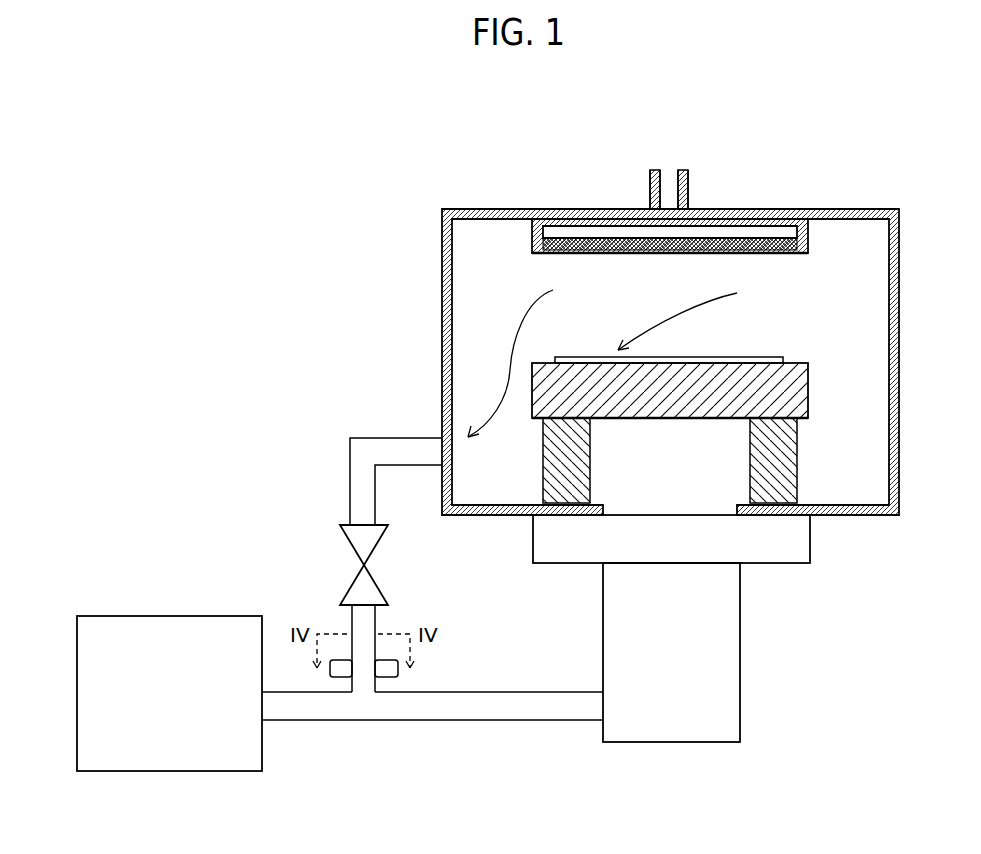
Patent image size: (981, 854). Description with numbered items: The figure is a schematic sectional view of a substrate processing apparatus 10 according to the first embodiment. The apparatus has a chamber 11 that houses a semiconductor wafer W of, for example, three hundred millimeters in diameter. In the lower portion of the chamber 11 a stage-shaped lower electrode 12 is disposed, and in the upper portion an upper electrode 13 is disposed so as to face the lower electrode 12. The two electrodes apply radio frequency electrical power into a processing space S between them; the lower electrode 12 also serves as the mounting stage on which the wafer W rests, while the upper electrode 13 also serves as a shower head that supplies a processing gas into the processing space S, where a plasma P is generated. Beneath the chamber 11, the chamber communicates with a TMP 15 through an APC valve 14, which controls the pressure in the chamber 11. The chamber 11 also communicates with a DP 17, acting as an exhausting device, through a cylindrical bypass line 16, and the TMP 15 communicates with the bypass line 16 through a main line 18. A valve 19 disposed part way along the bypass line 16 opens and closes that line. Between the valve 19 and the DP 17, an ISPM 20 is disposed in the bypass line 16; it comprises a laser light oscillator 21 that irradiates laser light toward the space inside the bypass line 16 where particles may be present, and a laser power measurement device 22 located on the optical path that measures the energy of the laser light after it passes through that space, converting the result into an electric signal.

The substrate processing apparatus 10 is at (504, 112).
The chamber 11 is at (900, 247).
The lower electrode 12 is at (808, 392).
The upper electrode 13 is at (797, 253).
The APC valve 14 is at (810, 545).
The TMP 15 is at (742, 655).
The bypass line 16 is at (365, 437).
The DP 17 is at (152, 614).
The main line 18 is at (520, 722).
The valve 19 is at (380, 540).
The ISPM 20 is at (369, 743).
The laser light oscillator 21 is at (388, 678).
The laser power measurement device 22 is at (338, 678).
The particle P is at (553, 290).
The processing space S is at (645, 310).
The wafer W is at (783, 360).